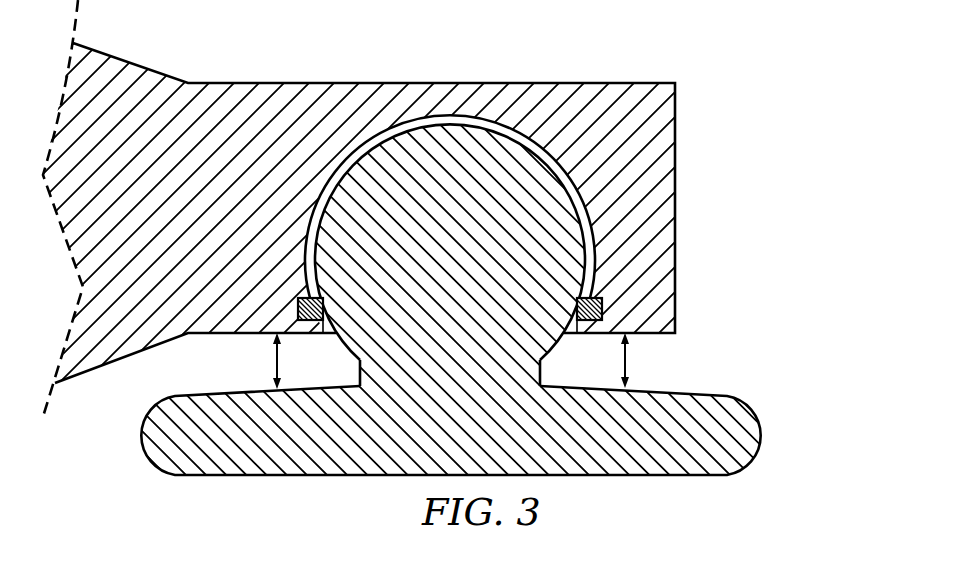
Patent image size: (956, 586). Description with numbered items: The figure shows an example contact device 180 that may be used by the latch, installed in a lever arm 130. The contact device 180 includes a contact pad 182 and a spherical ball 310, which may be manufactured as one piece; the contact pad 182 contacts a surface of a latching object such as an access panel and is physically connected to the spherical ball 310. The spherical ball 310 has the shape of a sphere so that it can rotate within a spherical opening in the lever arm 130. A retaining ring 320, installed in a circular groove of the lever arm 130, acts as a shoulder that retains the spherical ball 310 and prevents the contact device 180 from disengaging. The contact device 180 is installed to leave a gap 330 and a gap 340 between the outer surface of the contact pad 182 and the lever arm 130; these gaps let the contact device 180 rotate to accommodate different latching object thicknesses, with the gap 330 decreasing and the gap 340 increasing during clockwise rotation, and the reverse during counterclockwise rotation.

The lever arm 130 is at (676, 111).
The spherical ball 310 is at (578, 228).
The retaining ring 320 is at (297, 299).
The gap 330 is at (272, 360).
The gap 340 is at (630, 360).
The contact device 180 is at (742, 388).
The contact pad 182 is at (580, 476).